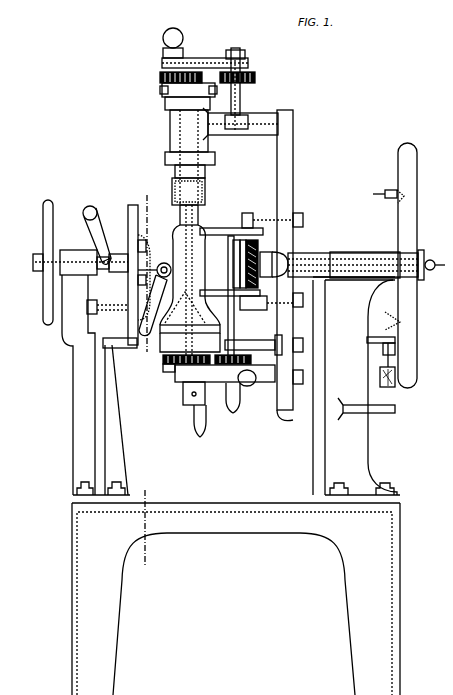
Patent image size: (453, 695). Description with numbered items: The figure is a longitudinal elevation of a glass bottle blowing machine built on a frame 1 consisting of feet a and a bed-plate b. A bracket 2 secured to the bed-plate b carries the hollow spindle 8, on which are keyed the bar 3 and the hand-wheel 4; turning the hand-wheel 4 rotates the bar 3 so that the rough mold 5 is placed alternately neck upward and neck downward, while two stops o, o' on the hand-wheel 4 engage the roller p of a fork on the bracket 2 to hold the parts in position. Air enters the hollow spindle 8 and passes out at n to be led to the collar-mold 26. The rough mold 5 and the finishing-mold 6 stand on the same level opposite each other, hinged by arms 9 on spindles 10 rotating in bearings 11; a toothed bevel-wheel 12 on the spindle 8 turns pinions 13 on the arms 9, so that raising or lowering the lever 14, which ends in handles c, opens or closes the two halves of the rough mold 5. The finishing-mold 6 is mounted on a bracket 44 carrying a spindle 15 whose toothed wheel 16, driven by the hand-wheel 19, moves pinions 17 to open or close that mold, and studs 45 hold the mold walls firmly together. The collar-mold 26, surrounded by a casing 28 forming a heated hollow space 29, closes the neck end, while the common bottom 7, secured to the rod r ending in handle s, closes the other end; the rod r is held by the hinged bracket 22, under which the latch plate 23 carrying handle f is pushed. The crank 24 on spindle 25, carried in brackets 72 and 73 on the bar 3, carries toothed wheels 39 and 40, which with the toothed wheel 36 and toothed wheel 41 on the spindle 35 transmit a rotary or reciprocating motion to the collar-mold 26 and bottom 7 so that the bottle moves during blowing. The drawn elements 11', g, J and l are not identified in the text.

The frame 1 is at (234, 614).
The bracket 2 is at (272, 422).
The bar 3 is at (290, 265).
The hand-wheel 4 is at (407, 265).
The rough mold 5 is at (190, 280).
The finishing-mold 6 is at (150, 352).
The bottom 7 is at (185, 308).
The hollow spindle 8 is at (352, 254).
The arms 9 is at (210, 232).
The spindles 10 is at (165, 256).
The bearings 11 is at (266, 256).
The handle 11' is at (108, 259).
The toothed bevel-wheel 12 is at (240, 266).
The pinions 13 is at (256, 241).
The lever 14 is at (278, 252).
The spindle 15 is at (258, 290).
The toothed wheel 16 is at (142, 275).
The pinions 17 is at (142, 240).
The hand-wheel 19 is at (53, 212).
The hinged bracket 22 is at (225, 373).
The plate 23 is at (252, 384).
The crank 24 is at (204, 58).
The spindle 25 is at (241, 104).
The collar-mold 26 is at (205, 200).
The casing 28 is at (175, 170).
The hollow space 29 is at (172, 192).
The spindle 35 is at (190, 157).
The toothed wheel 36 is at (160, 77).
The toothed wheel 39 is at (256, 80).
The toothed wheel 40 is at (251, 359).
The toothed wheel 41 is at (163, 366).
The bracket 44 is at (99, 385).
The studs 45 is at (383, 350).
The bracket 72 is at (236, 120).
The bracket 73 is at (252, 343).
The feet a is at (223, 546).
The bed-plate b is at (238, 506).
The handles c is at (316, 254).
The handle f is at (240, 398).
The lever g is at (380, 377).
The knob J is at (84, 215).
The ball handle l is at (180, 30).
The air outlet n is at (434, 265).
The stop o is at (387, 198).
The stop o' is at (388, 321).
The roller p is at (367, 339).
The rod r is at (190, 396).
The handle s is at (194, 427).